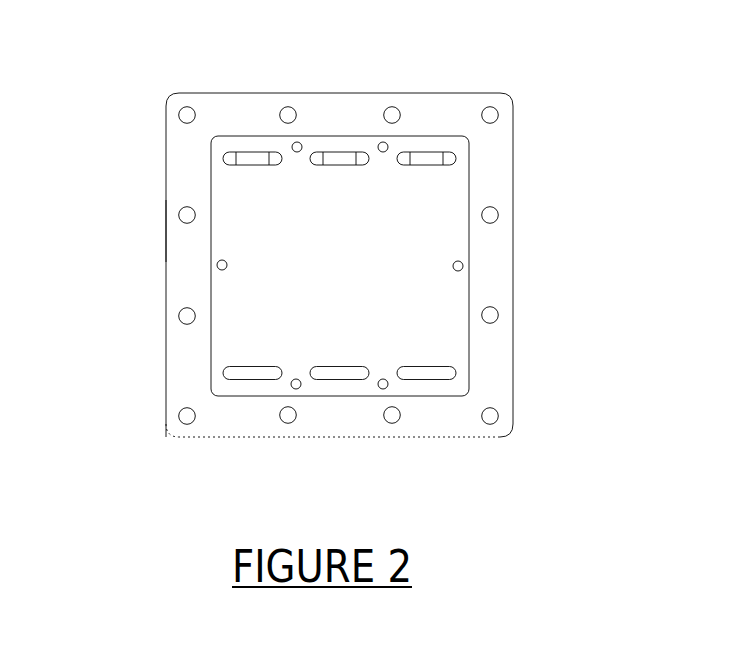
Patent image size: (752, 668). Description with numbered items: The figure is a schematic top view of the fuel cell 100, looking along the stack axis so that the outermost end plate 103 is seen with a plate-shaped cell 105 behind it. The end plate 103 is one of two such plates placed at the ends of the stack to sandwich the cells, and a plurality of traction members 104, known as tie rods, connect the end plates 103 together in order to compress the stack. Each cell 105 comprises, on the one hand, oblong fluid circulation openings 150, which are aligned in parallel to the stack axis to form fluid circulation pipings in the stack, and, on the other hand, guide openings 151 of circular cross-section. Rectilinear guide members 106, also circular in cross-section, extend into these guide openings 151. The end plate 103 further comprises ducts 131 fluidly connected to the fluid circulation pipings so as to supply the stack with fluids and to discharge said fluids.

The fuel cell 100 is at (166, 88).
The end plate 103 is at (170, 262).
The traction member 104 is at (498, 115).
The cell 105 is at (439, 321).
The guide member 106 is at (383, 142).
The duct 131 is at (260, 157).
The fluid circulation opening 150 is at (274, 165).
The guide opening 151 is at (297, 142).